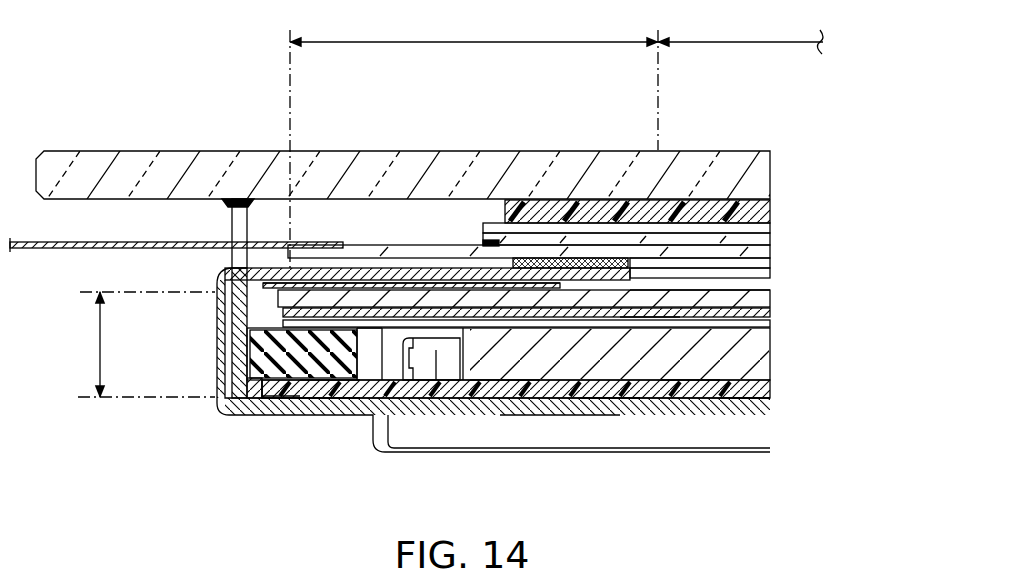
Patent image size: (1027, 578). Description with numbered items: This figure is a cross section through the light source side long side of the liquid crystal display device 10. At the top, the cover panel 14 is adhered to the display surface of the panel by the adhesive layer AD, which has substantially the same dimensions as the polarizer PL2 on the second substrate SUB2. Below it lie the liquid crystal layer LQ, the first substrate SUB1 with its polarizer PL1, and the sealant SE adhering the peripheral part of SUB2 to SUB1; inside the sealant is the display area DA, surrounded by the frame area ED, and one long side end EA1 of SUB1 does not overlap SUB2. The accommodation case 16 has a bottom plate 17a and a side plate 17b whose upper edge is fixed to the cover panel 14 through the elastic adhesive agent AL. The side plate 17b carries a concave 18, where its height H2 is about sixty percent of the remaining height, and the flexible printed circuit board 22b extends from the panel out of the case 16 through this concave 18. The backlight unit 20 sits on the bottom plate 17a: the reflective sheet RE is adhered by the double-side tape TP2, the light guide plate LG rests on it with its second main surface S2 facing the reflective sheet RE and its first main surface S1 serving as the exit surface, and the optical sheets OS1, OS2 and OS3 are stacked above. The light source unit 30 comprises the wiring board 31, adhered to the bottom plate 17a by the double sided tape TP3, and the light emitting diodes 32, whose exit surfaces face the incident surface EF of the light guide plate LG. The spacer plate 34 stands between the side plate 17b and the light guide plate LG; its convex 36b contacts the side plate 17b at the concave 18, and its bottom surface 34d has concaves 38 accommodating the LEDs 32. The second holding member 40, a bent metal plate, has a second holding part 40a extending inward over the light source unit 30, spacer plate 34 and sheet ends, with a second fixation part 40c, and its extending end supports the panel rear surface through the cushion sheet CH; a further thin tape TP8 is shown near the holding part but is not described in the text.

The liquid crystal display device 10 is at (703, 112).
The cover panel 14 is at (190, 160).
The accommodation case 16 is at (555, 422).
The bottom plate 17a is at (605, 398).
The side plate 17b is at (240, 332).
The concave 18 is at (240, 225).
The backlight unit 20 is at (500, 392).
The flexible printed circuit board 22b is at (38, 250).
The light source unit 30 is at (426, 372).
The wiring board 31 is at (331, 398).
The light emitting diode 32 is at (440, 364).
The spacer plate 34 is at (256, 408).
The bottom surface 34d is at (268, 400).
The convex 36b is at (262, 350).
The concave 38 is at (356, 382).
The second holding member 40 is at (214, 305).
The second holding part 40a is at (420, 268).
The second fixation part 40c is at (238, 392).
The adhesive layer AD is at (734, 212).
The adhesive agent AL is at (228, 205).
The cushion sheet CH is at (578, 264).
The display area DA is at (740, 35).
The long side end EA1 is at (350, 250).
The frame area ED is at (474, 143).
The incident surface EF is at (452, 352).
The height H2 is at (138, 344).
The light guide plate LG is at (770, 356).
The liquid crystal layer LQ is at (770, 239).
The optical sheet OS1 is at (770, 325).
The optical sheet OS2 is at (770, 313).
The optical sheet OS3 is at (770, 298).
The polarizer PL1 is at (770, 273).
The polarizer PL2 is at (760, 210).
The reflective sheet RE is at (770, 390).
The first main surface S1 is at (648, 318).
The second main surface S2 is at (690, 378).
The sealant SE is at (640, 258).
The first substrate SUB1 is at (770, 252).
The second substrate SUB2 is at (770, 228).
The double-side tape TP2 is at (745, 392).
The double sided tape TP3 is at (292, 402).
The tape 8 TP8 is at (480, 286).